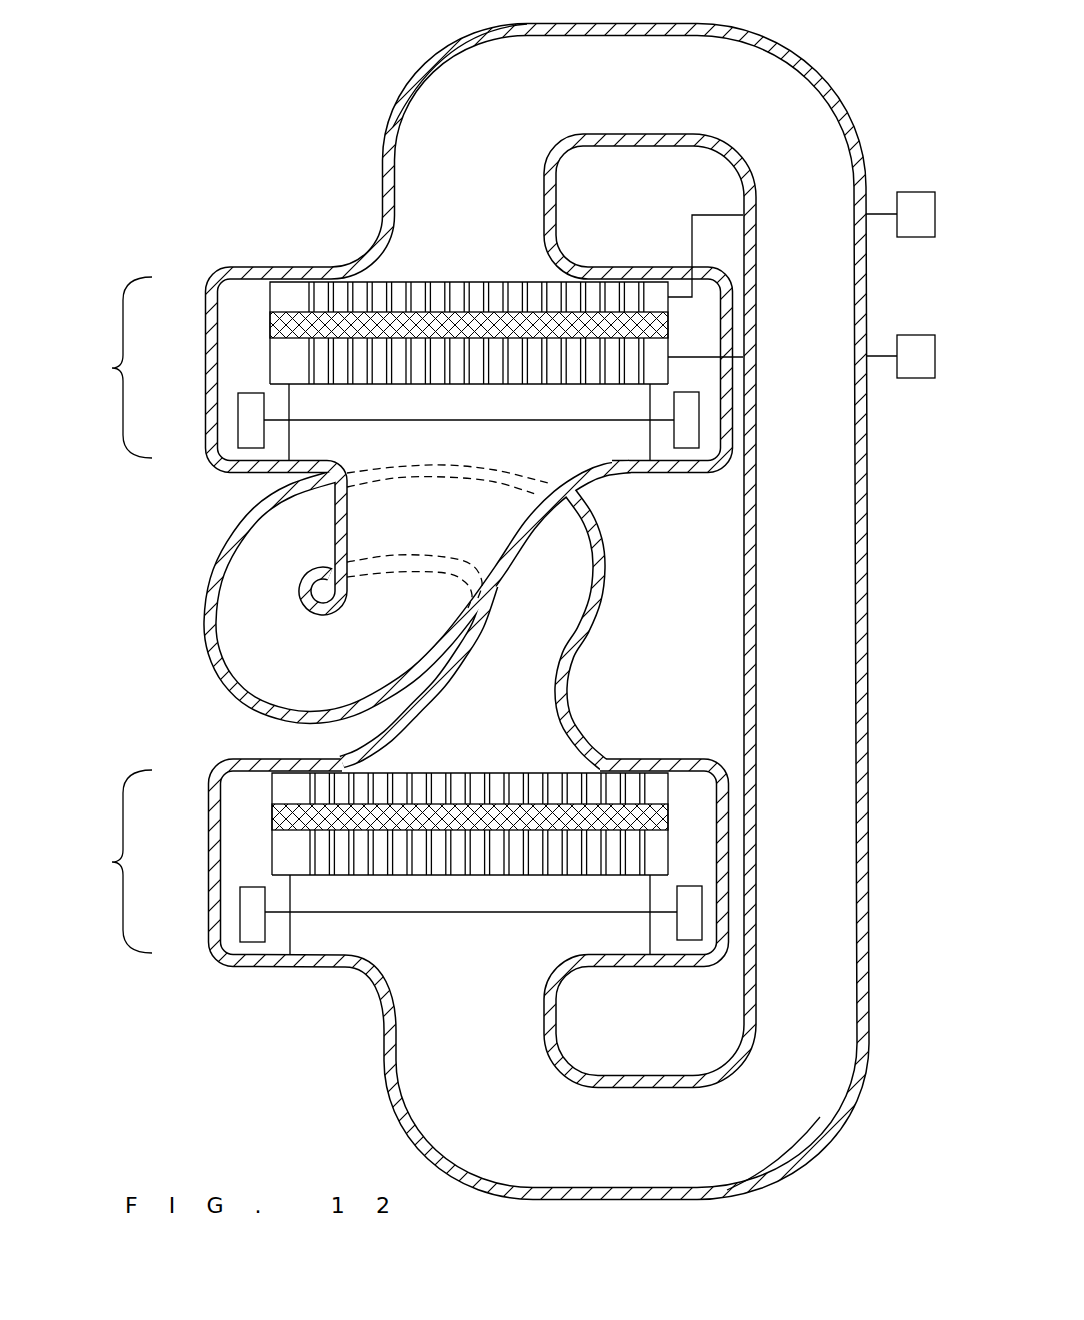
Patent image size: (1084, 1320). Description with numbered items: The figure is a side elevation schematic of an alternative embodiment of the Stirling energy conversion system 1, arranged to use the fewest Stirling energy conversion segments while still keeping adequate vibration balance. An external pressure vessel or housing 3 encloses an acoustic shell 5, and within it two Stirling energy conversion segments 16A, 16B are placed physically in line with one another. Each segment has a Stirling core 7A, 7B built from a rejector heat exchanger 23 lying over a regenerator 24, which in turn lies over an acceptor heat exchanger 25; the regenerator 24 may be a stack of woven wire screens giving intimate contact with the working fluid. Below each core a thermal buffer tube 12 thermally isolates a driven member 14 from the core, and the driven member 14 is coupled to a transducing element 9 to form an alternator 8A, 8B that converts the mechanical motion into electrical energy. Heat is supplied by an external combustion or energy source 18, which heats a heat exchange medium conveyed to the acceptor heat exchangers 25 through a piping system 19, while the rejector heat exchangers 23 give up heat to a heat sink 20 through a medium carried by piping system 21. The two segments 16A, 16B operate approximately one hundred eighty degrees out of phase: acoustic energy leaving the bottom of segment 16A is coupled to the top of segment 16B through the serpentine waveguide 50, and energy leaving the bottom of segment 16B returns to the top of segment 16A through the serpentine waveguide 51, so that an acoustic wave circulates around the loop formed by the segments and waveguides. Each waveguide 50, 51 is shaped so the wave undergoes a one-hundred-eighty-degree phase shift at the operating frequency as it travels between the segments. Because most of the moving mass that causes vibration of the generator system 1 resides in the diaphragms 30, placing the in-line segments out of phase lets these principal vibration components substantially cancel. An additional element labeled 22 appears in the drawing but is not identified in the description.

The Stirling energy conversion system 1 is at (288, 102).
The pressure vessel 3 is at (382, 177).
The acoustic shell 5 is at (290, 897).
The Stirling core 7A is at (397, 280).
The Stirling core 7B is at (368, 772).
The alternator 8A is at (233, 422).
The alternator 8B is at (237, 923).
The transducing element 9 is at (252, 903).
The thermal buffer tube 12 is at (315, 400).
The driven member 14 is at (335, 420).
The Stirling energy conversion segment 16A is at (110, 368).
The Stirling energy conversion segment 16B is at (110, 862).
The energy source 18 is at (905, 380).
The piping system 19 is at (882, 355).
The heat sink 20 is at (910, 192).
The piping system 21 is at (878, 212).
The heat receiving fins 22 is at (253, 818).
The rejector heat exchanger 23 is at (287, 300).
The regenerator 24 is at (290, 328).
The acceptor heat exchanger 25 is at (290, 362).
The diaphragms 30 is at (500, 421).
The waveguide 50 is at (207, 627).
The waveguide 51 is at (870, 497).